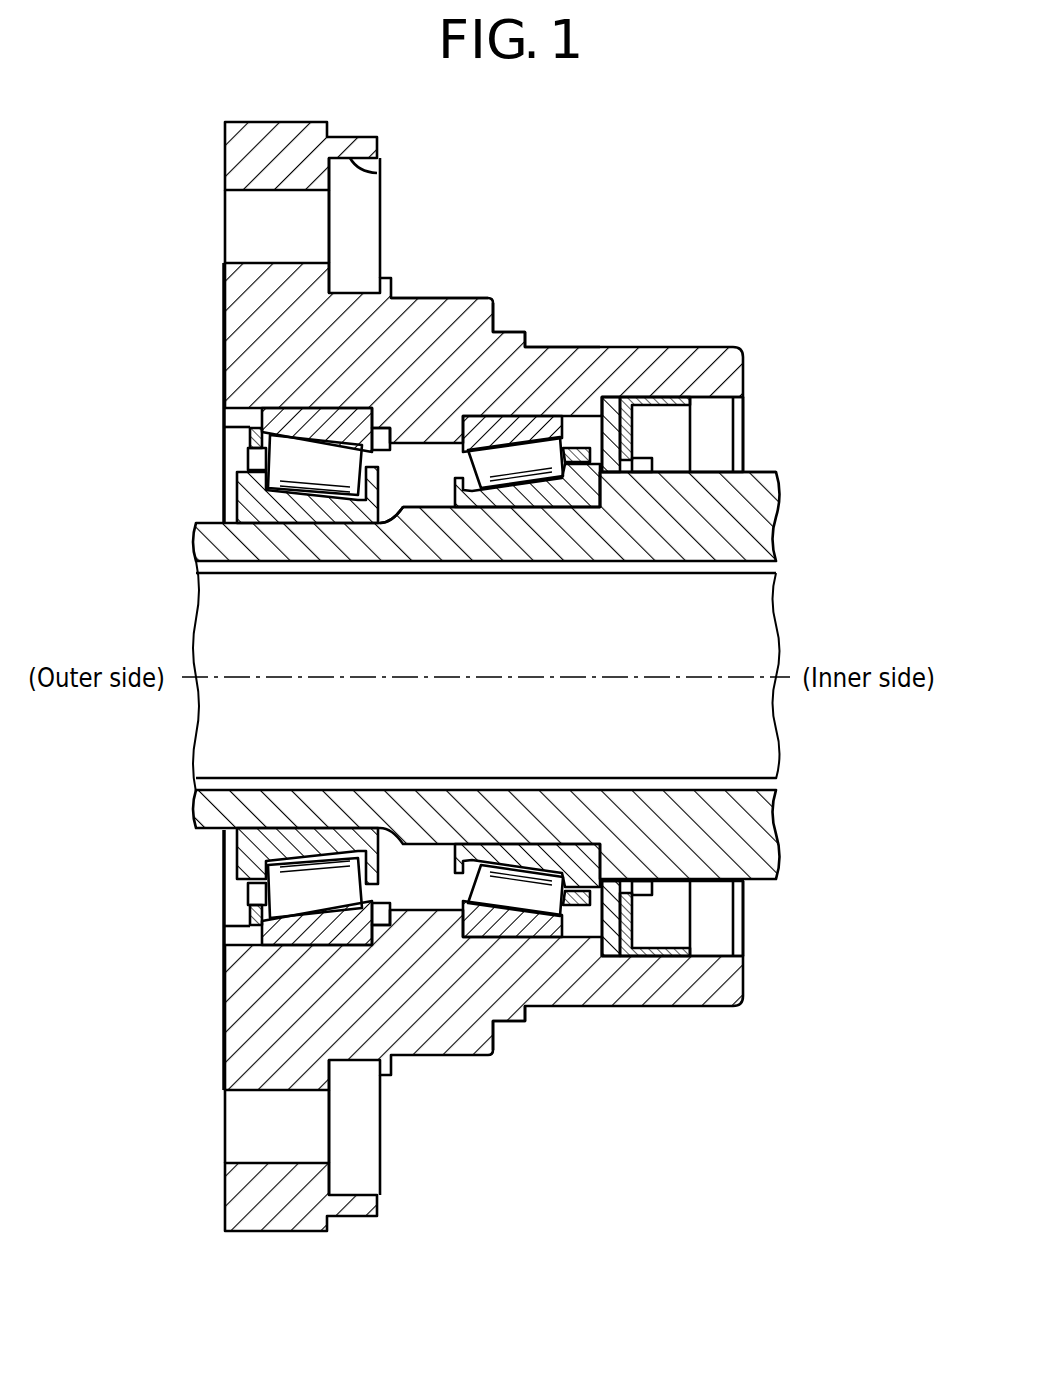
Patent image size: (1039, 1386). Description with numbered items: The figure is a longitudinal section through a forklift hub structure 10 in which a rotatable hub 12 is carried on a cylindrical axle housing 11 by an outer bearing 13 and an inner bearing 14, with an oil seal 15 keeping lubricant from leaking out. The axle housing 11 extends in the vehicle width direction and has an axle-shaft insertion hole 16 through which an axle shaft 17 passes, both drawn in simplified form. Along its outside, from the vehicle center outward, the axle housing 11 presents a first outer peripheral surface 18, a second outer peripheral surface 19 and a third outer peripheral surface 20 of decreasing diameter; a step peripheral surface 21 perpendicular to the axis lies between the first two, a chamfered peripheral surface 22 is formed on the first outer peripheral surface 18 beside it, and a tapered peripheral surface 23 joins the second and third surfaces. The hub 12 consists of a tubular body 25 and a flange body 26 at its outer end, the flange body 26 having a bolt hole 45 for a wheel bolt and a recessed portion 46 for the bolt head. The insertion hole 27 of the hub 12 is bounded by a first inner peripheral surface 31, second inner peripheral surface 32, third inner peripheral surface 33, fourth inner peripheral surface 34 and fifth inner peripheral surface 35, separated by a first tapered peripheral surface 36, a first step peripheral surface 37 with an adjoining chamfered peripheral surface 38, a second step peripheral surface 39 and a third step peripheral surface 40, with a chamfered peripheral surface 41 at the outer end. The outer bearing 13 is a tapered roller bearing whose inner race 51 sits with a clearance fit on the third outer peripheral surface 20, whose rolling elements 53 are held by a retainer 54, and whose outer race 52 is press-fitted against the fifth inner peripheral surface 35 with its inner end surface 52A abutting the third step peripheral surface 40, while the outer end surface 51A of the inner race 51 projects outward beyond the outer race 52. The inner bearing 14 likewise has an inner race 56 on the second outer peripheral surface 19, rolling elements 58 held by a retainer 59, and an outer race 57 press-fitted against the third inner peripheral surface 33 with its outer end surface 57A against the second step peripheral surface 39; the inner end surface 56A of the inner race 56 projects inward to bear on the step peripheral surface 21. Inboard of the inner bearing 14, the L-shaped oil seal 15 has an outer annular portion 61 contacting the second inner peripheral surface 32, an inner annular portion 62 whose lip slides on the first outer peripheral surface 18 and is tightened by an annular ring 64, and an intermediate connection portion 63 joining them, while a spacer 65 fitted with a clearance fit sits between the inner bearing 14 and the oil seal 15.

The hub structure 10 is at (664, 192).
The axle housing 11 is at (225, 520).
The hub 12 is at (488, 298).
The outer bearing 13 is at (272, 442).
The inner bearing 14 is at (525, 440).
The oil seal 15 is at (675, 398).
The axle-shaft insertion hole 16 is at (300, 572).
The axle shaft 17 is at (235, 705).
The first outer peripheral surface 18 is at (752, 456).
The second outer peripheral surface 19 is at (505, 510).
The third outer peripheral surface 20 is at (265, 553).
The step peripheral surface 21 is at (592, 508).
The chamfered peripheral surface 22 is at (634, 474).
The tapered peripheral surface 23 is at (406, 510).
The tubular body 25 is at (538, 347).
The flange body 26 is at (225, 160).
The insertion hole 27 is at (232, 920).
The first inner peripheral surface 31 is at (726, 385).
The second inner peripheral surface 32 is at (628, 398).
The third inner peripheral surface 33 is at (500, 334).
The fourth inner peripheral surface 34 is at (393, 428).
The fifth inner peripheral surface 35 is at (288, 412).
The first tapered peripheral surface 36 is at (740, 420).
The first step peripheral surface 37 is at (606, 398).
The chamfered peripheral surface 38 is at (655, 472).
The second step peripheral surface 39 is at (447, 298).
The third step peripheral surface 40 is at (296, 424).
The chamfered peripheral surface 41 is at (252, 430).
The bolt hole 45 is at (235, 265).
The recessed portion 46 is at (378, 163).
The inner race 51 is at (318, 866).
The outer end surface 51A is at (240, 866).
The outer race 52 is at (320, 950).
The inner end surface 52A is at (445, 940).
The rolling elements 53 is at (332, 900).
The retainer 54 is at (392, 904).
The inner race 56 is at (540, 905).
The inner end surface 56A is at (612, 905).
The outer race 57 is at (562, 1004).
The outer end surface 57A is at (505, 1016).
The rolling elements 58 is at (485, 900).
The retainer 59 is at (440, 848).
The outer annular portion 61 is at (688, 990).
The inner annular portion 62 is at (655, 905).
The intermediate connection portion 63 is at (610, 960).
The annular ring 64 is at (660, 912).
The spacer 65 is at (586, 448).